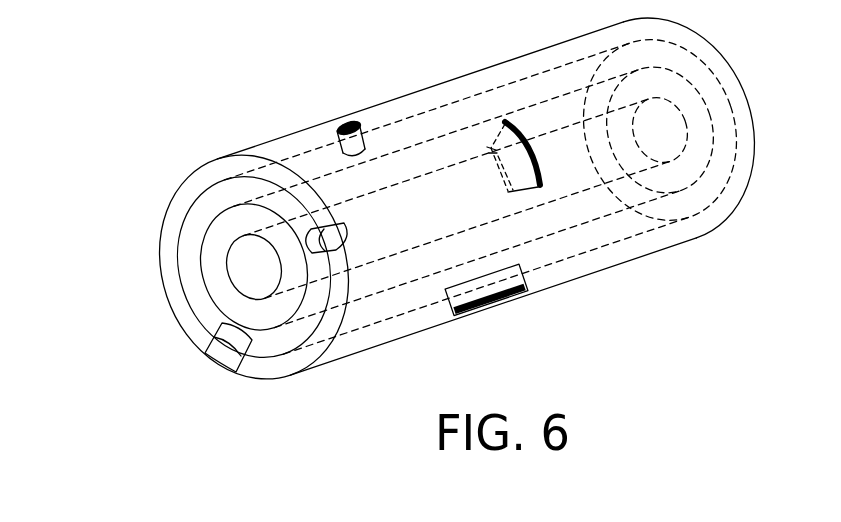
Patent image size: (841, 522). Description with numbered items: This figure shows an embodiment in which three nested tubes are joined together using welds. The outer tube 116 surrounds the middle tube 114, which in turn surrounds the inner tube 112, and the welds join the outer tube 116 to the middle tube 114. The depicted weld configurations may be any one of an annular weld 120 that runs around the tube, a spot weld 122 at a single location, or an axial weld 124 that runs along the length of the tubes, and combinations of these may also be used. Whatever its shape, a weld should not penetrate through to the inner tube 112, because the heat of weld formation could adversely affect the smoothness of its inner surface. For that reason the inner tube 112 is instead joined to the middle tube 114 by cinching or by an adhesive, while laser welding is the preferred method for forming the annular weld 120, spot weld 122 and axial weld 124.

The inner tube 112 is at (220, 273).
The middle tube 114 is at (203, 305).
The outer tube 116 is at (176, 229).
The annular weld 120 is at (517, 127).
The spot weld 122 is at (348, 120).
The axial weld 124 is at (488, 312).